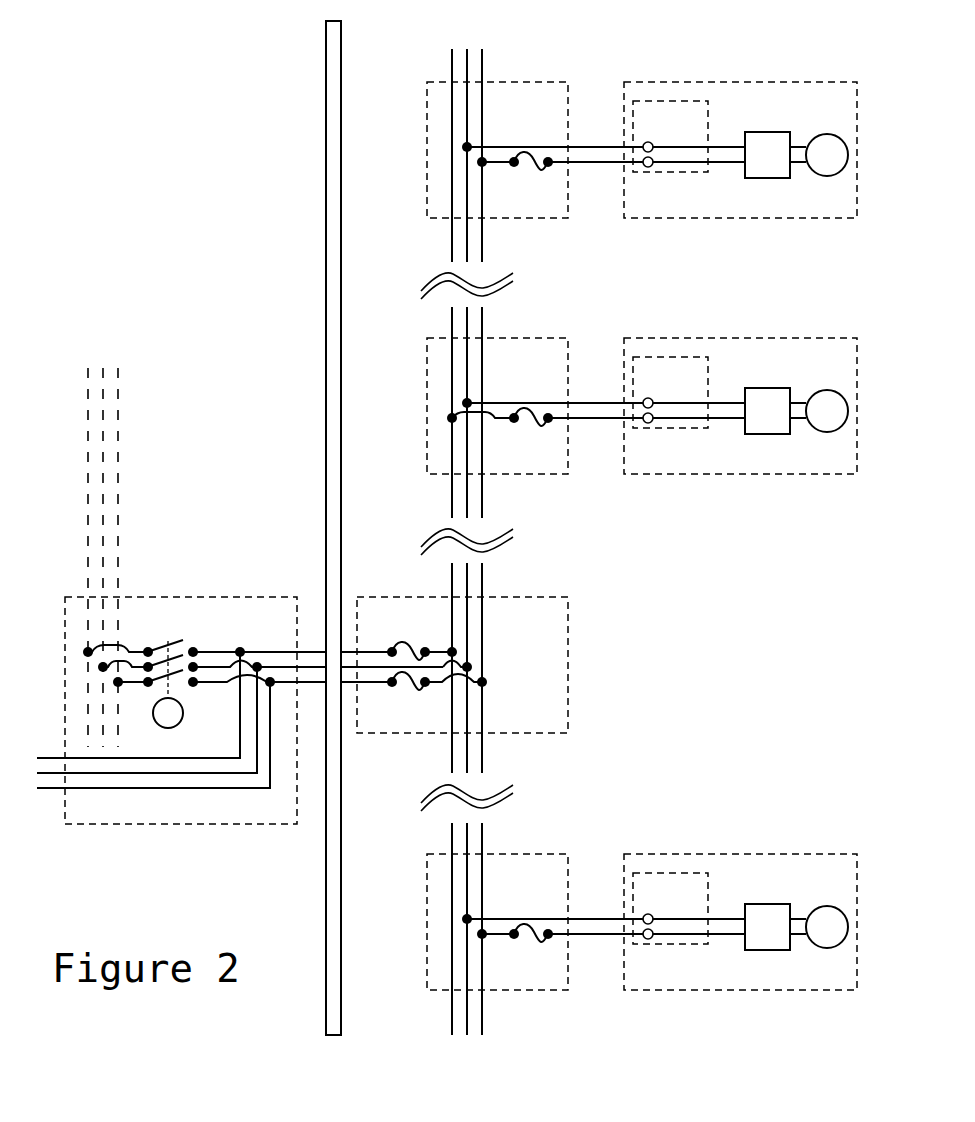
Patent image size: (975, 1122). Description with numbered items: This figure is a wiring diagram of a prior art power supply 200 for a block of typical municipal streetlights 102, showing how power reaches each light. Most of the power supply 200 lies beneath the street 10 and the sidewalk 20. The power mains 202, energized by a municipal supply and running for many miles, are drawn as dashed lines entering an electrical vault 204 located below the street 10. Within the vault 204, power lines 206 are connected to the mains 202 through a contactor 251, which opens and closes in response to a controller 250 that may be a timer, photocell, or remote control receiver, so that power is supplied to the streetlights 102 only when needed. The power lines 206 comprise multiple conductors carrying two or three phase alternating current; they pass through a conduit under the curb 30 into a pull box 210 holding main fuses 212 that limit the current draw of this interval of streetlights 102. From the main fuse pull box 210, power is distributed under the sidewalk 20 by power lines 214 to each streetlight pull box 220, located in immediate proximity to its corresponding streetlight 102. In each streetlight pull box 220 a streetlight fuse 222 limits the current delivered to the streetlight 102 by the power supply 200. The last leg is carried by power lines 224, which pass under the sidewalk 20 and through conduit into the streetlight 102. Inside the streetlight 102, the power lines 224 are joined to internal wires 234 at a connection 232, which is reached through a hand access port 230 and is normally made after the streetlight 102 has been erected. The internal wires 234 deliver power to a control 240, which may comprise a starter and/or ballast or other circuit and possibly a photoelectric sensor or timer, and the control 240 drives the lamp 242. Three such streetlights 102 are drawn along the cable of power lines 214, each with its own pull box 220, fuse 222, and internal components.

The power supply 200 is at (752, 45).
The street 10 is at (212, 323).
The sidewalk 20 is at (688, 681).
The curb 30 is at (342, 790).
The streetlight 102 is at (703, 82).
The power mains 202 is at (119, 487).
The electrical vault 204 is at (250, 824).
The power lines 206 is at (72, 845).
The pull box 210 is at (462, 655).
The main fuses 212 is at (432, 677).
The power lines 214 is at (452, 230).
The streetlight pull box 220 is at (497, 525).
The streetlight fuse 222 is at (525, 556).
The power lines 224 is at (596, 551).
The hand access port 230 is at (709, 110).
The connection 232 is at (650, 167).
The internal wires 234 is at (729, 163).
The control 240 is at (771, 132).
The lamp 242 is at (825, 180).
The controller 250 is at (173, 726).
The contactor 251 is at (180, 640).